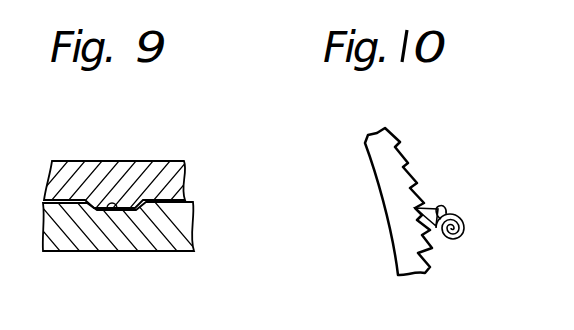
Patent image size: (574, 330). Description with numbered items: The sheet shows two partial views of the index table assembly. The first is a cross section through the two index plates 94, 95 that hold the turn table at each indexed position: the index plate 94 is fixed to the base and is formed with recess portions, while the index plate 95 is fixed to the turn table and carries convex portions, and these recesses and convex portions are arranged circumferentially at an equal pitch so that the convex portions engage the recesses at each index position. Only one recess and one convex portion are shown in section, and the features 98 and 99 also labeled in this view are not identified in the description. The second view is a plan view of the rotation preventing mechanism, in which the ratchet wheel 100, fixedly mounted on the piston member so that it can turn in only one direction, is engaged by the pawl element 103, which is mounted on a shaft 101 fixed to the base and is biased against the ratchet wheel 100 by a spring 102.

In FIG. 9, the index plate 94 is at (192, 232).
In FIG. 9, the index plate 95 is at (183, 175).
In FIG. 9, the groove 98 is at (118, 210).
In FIG. 9, the bump 99 is at (128, 203).
In FIG. 10, the ratchet wheel 100 is at (384, 177).
In FIG. 10, the shaft 101 is at (498, 235).
In FIG. 10, the spring 102 is at (447, 209).
In FIG. 10, the pawl element 103 is at (428, 226).